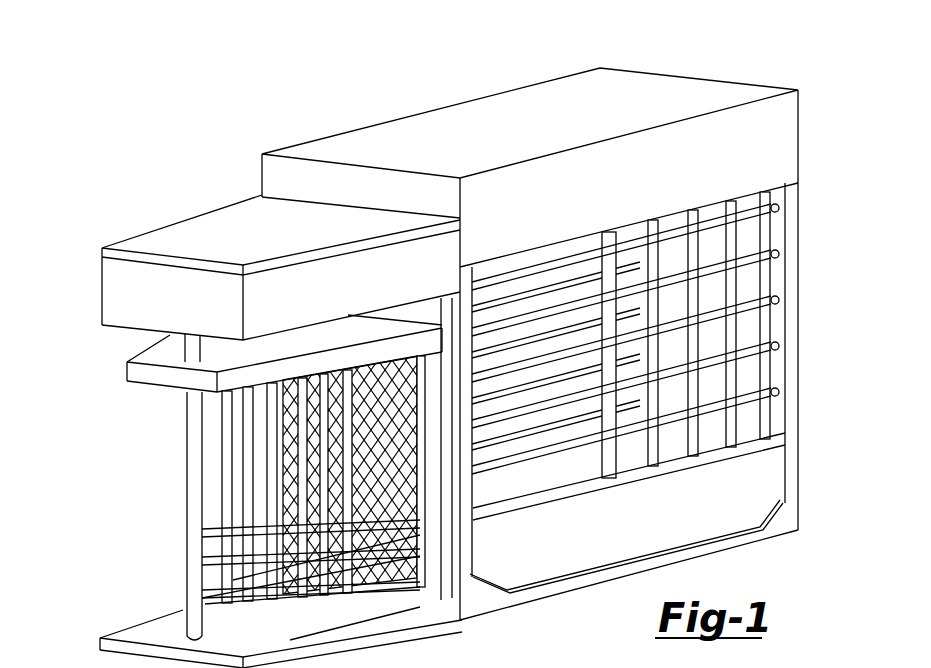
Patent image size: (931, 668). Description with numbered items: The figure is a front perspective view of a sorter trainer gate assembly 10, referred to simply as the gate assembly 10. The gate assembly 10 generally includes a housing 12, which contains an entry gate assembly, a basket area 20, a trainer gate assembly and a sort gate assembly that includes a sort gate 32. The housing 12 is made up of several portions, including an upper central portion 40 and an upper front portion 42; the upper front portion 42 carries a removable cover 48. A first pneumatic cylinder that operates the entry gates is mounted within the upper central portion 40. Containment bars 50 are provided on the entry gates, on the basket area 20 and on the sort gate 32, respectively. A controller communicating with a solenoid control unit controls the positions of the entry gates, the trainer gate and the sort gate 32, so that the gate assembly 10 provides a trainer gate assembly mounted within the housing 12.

The sorter trainer gate assembly 10 is at (192, 88).
The housing 12 is at (763, 138).
The basket area 20 is at (498, 390).
The sort gate 32 is at (225, 448).
The upper central portion 40 is at (315, 177).
The upper front portion 42 is at (350, 297).
The removable cover 48 is at (173, 228).
The containment bars 50 is at (747, 302).